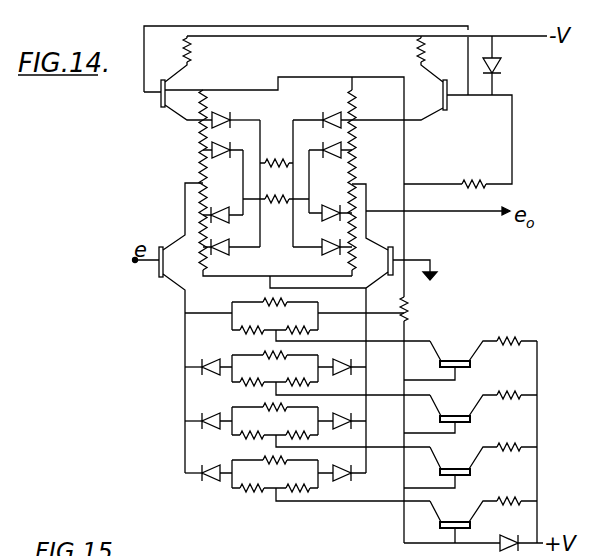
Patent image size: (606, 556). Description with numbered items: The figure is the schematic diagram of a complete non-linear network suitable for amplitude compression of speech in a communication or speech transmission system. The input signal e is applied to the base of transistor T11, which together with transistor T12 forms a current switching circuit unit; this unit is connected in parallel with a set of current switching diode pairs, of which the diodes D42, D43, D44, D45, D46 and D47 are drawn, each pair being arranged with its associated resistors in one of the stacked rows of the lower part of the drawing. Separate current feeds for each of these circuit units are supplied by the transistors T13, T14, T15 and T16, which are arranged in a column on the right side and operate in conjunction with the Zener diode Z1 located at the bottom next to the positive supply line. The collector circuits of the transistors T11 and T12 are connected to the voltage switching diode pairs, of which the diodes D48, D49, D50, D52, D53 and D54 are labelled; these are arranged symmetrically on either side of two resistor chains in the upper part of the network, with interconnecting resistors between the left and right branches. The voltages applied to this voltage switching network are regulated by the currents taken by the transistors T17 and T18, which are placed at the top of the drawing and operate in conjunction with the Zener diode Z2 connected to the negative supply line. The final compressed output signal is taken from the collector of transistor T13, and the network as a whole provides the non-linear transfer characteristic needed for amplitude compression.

The transistor T11 is at (170, 328).
The transistor T12 is at (353, 328).
The transistor T13 is at (470, 357).
The transistor T14 is at (470, 411).
The transistor T15 is at (470, 465).
The transistor T16 is at (483, 520).
The transistor T17 is at (186, 78).
The transistor T18 is at (458, 112).
The current switching diode D42 is at (207, 356).
The current switching diode D43 is at (341, 359).
The current switching diode D44 is at (207, 408).
The current switching diode D45 is at (304, 423).
The current switching diode D46 is at (207, 462).
The current switching diode D47 is at (336, 481).
The voltage switching diode D48 is at (236, 108).
The voltage switching diode D49 is at (239, 255).
The voltage switching diode D50 is at (348, 108).
The voltage switching diode D52 is at (207, 151).
The voltage switching diode D53 is at (203, 215).
The voltage switching diode D54 is at (355, 143).
The Zener diode Z1 is at (510, 540).
The Zener diode Z2 is at (508, 65).